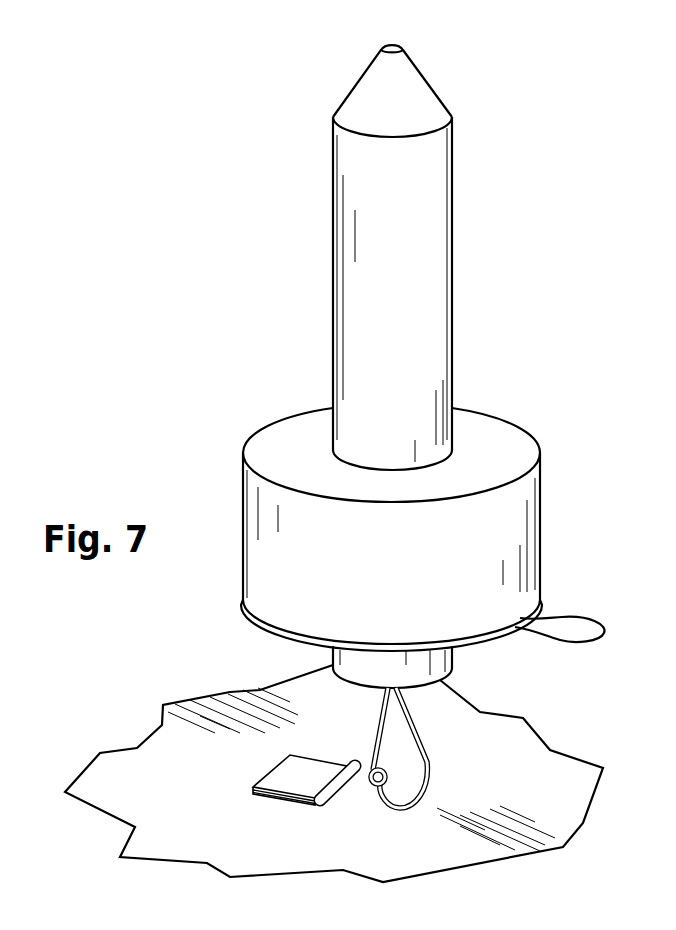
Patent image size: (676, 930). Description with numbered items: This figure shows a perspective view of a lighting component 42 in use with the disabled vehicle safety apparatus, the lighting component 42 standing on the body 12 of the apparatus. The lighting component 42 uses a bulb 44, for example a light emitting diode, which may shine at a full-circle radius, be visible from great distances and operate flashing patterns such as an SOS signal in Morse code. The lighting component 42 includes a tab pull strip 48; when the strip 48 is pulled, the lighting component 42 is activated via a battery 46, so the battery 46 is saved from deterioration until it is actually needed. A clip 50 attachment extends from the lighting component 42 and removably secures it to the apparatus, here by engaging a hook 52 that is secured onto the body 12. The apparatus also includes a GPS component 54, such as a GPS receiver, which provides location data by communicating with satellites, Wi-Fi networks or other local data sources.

The body 12 is at (166, 813).
The lighting component 42 is at (556, 214).
The bulb 44 is at (418, 268).
The battery 46 is at (533, 490).
The tab pull strip 48 is at (580, 627).
The clip 50 is at (438, 792).
The hook 52 is at (333, 803).
The GPS component 54 is at (512, 562).